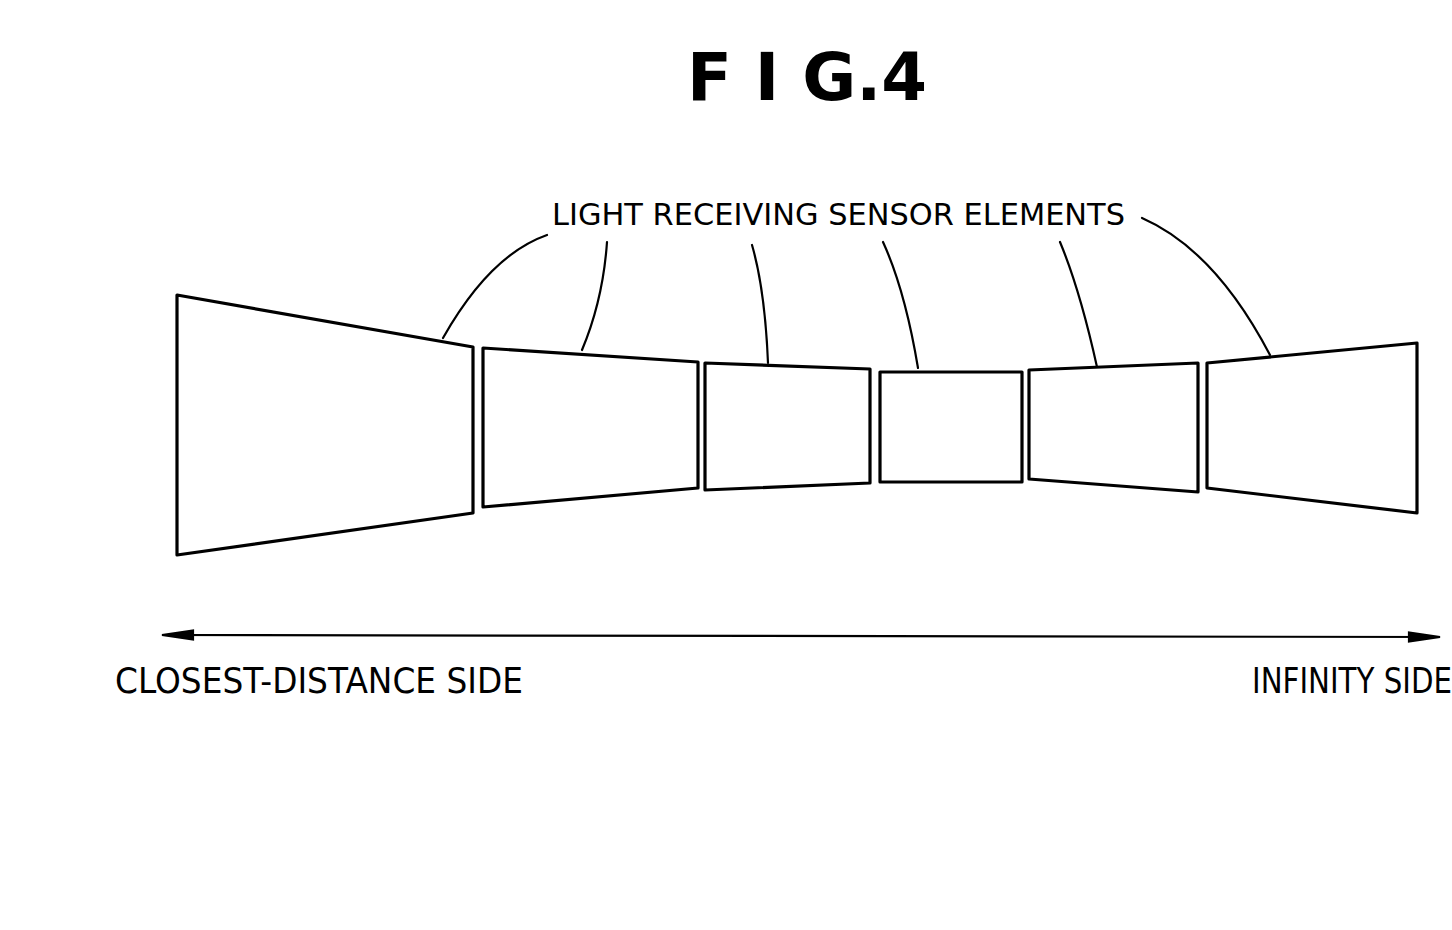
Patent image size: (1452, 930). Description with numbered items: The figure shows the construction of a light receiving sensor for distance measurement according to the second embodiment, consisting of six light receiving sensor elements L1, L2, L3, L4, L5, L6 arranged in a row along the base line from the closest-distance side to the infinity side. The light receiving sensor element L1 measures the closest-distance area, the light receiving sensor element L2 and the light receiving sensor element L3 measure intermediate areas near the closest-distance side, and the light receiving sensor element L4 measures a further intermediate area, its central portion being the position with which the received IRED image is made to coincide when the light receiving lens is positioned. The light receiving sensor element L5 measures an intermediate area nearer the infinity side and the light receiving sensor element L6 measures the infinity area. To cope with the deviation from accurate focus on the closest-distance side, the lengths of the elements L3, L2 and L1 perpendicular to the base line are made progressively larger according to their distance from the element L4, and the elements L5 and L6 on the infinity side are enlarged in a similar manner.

The light receiving sensor element L1 is at (325, 425).
The light receiving sensor element L2 is at (590, 427).
The light receiving sensor element L3 is at (787, 426).
The light receiving sensor element L4 is at (951, 427).
The light receiving sensor element L5 is at (1113, 427).
The light receiving sensor element L6 is at (1312, 428).